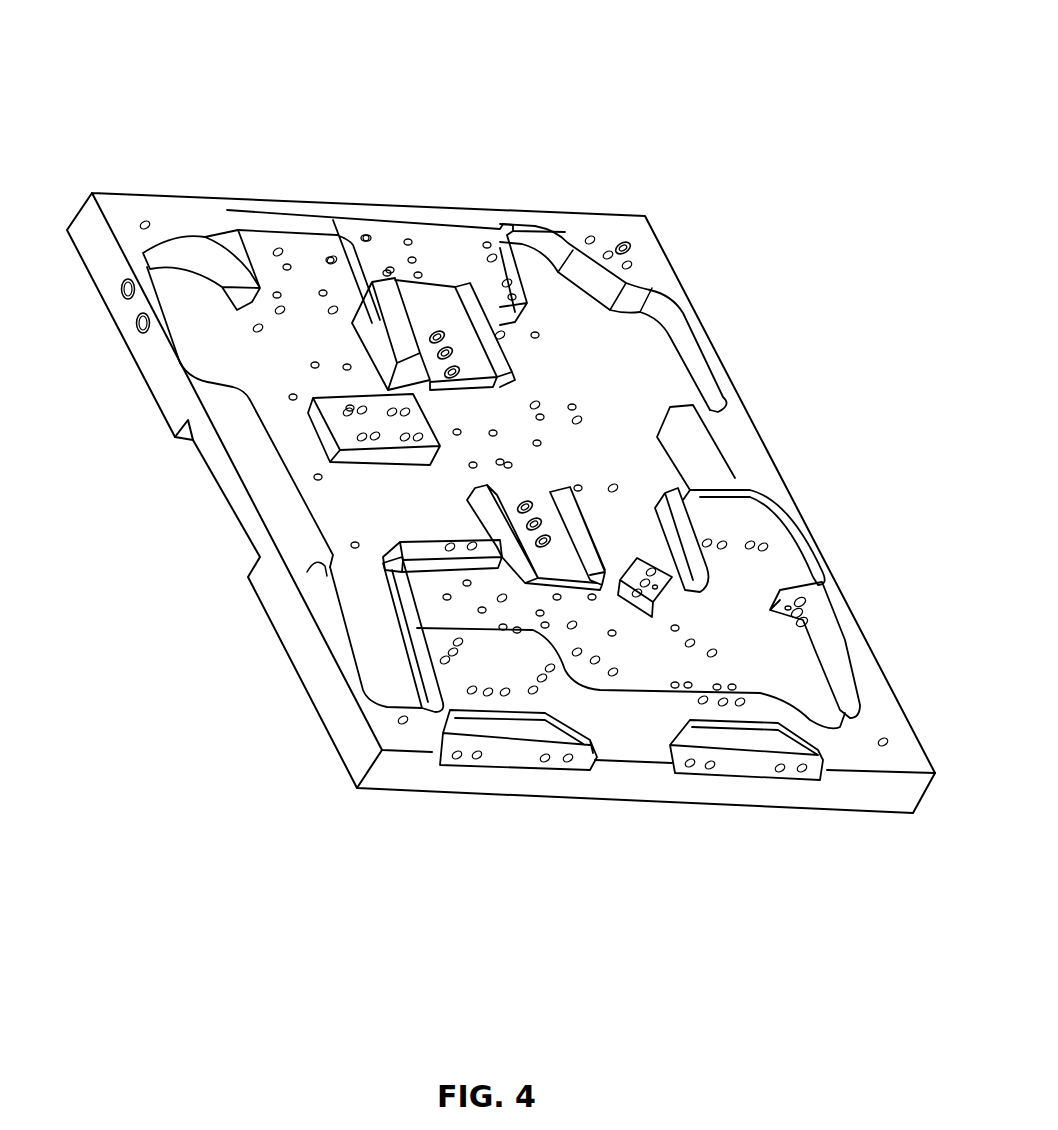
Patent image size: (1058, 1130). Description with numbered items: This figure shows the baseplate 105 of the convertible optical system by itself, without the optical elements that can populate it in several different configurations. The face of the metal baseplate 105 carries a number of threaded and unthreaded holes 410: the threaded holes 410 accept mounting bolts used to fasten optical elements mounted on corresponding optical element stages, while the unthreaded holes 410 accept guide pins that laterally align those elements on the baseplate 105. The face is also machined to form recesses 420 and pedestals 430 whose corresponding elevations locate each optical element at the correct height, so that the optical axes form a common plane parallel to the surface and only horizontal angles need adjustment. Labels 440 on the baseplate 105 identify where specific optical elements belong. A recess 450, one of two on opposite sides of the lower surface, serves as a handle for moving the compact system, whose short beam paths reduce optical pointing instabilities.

The baseplate 105 is at (492, 37).
The threaded and unthreaded holes 410 is at (456, 352).
The recesses 420 is at (557, 552).
The pedestals 430 is at (618, 600).
The labels 440 is at (370, 330).
The recess 450 is at (215, 489).